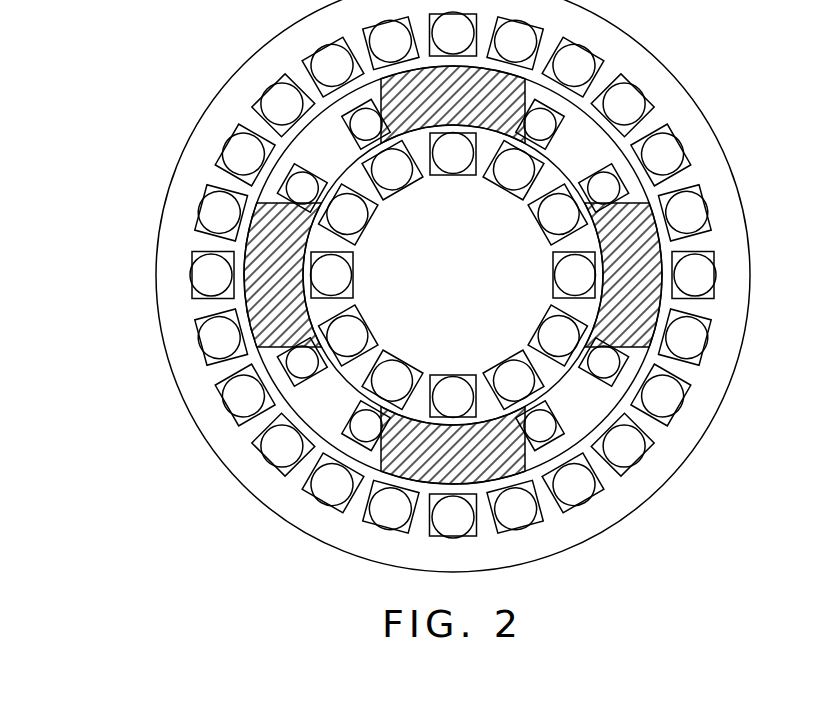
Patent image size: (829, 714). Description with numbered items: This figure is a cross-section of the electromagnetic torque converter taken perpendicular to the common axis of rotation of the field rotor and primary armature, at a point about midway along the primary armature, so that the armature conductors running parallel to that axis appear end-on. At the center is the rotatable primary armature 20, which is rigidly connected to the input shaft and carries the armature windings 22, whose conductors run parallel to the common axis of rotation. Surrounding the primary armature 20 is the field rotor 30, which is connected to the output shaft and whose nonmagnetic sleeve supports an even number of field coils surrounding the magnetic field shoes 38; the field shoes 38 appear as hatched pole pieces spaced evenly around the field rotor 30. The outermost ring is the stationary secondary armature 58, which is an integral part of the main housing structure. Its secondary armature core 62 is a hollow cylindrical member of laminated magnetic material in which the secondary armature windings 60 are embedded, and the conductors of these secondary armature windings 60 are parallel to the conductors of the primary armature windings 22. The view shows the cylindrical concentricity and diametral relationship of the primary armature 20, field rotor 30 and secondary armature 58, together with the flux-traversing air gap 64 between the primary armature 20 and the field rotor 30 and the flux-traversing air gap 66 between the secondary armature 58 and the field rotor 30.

The primary armature 20 is at (470, 291).
The armature windings 22 is at (523, 390).
The field rotor 30 is at (333, 407).
The magnetic field shoes 38 is at (259, 308).
The secondary armature 58 is at (160, 193).
The secondary armature windings 60 is at (586, 63).
The secondary armature core 62 is at (253, 121).
The air gap 64 is at (592, 186).
The air gap 66 is at (628, 126).